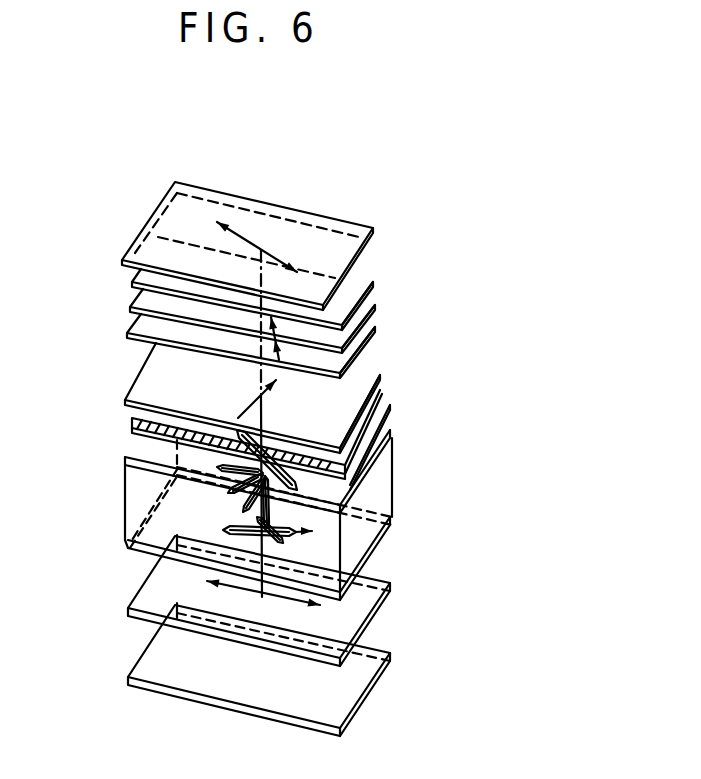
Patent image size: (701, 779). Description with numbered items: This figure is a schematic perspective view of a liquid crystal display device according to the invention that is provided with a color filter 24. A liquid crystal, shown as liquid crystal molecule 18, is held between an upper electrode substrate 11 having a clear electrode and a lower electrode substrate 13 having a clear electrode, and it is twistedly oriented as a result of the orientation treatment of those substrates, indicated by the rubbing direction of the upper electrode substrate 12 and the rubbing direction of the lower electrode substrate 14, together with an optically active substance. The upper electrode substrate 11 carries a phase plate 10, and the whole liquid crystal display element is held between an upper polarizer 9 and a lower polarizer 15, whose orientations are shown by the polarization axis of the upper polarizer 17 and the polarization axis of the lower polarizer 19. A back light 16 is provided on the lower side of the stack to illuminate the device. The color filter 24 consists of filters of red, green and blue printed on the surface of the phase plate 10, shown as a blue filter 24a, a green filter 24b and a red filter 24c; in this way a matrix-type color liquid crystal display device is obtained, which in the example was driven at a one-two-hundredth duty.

The upper polarizer 9 is at (362, 256).
The phase plate 10 is at (375, 283).
The upper electrode substrate 11 is at (387, 437).
The rubbing direction of the upper electrode substrate 12 is at (388, 480).
The lower electrode substrate 13 is at (392, 527).
The rubbing direction of the lower electrode substrate 14 is at (318, 540).
The lower polarizer 15 is at (367, 618).
The back light 16 is at (365, 690).
The polarization axis of the upper polarizer 17 is at (245, 236).
The liquid crystal molecule 18 is at (235, 452).
The polarization axis of the lower polarizer 19 is at (262, 597).
The color filter 24 is at (408, 377).
The blue filter 24a is at (304, 424).
The green filter 24b is at (380, 453).
The red filter 24c is at (305, 445).